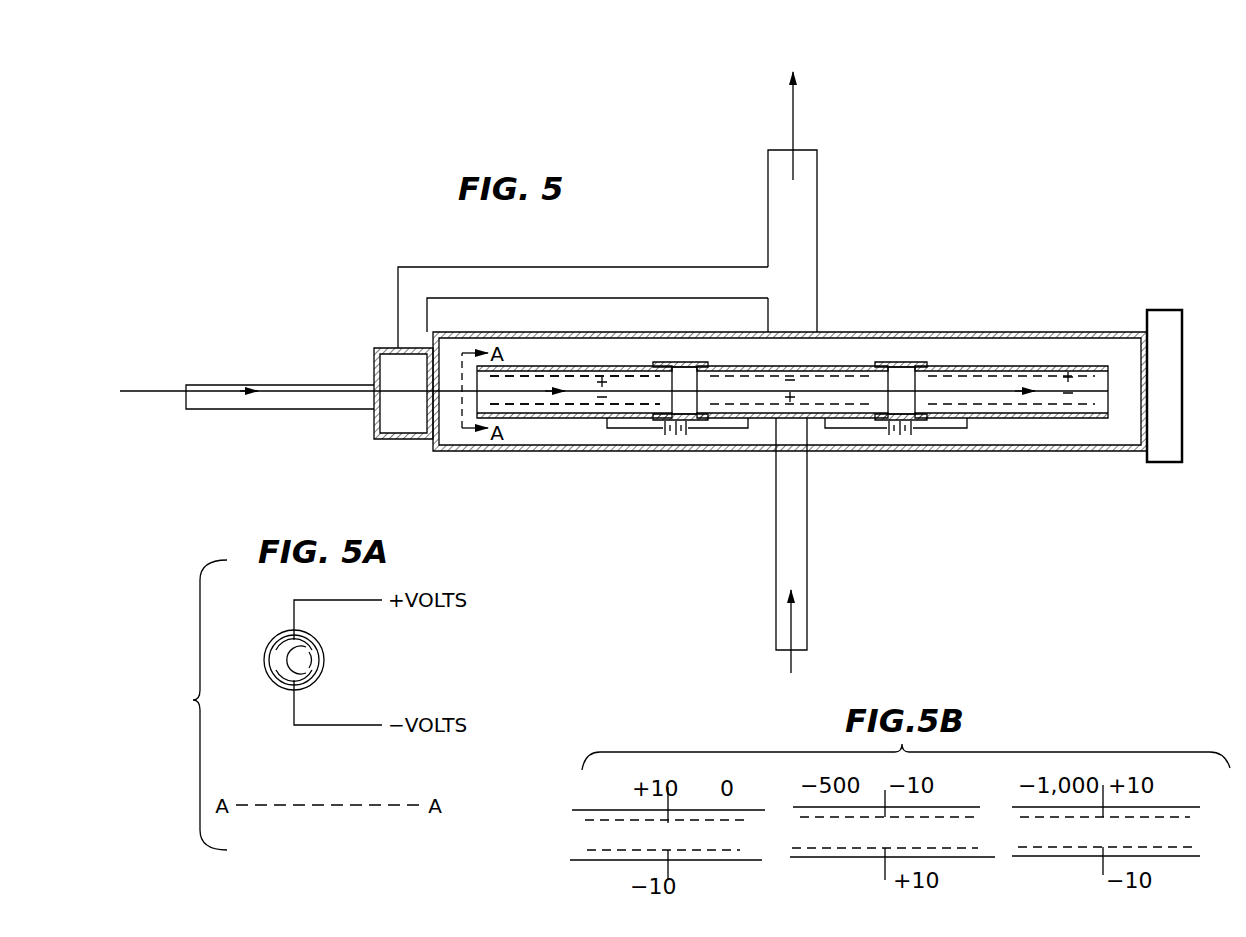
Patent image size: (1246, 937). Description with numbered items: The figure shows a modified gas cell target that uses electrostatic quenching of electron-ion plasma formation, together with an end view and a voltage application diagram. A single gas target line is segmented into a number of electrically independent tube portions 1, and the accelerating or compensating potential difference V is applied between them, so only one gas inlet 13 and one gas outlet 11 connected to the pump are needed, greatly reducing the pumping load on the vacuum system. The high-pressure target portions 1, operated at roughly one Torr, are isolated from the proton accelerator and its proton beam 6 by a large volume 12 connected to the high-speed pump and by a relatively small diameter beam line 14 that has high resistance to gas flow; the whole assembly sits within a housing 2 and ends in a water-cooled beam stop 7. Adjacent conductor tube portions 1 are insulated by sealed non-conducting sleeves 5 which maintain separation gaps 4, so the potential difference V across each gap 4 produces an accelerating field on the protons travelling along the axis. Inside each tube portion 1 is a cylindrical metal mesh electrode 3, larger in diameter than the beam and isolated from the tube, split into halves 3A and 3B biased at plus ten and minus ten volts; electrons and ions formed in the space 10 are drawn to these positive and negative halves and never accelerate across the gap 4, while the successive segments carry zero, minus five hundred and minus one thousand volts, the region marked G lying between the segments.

In FIG. 5, the tube portion 1 is at (533, 366).
In FIG. 5A, the tube portion 1 is at (285, 633).
In FIG. 5, the housing 2 is at (1050, 450).
In FIG. 5, the cylindrical metal mesh electrode 3 is at (590, 405).
In FIG. 5A, the cylindrical metal mesh electrode 3 is at (283, 683).
In FIG. 5B, the cylindrical metal mesh electrode 3 is at (604, 822).
In FIG. 5, the positive half of the mesh 3A is at (613, 376).
In FIG. 5A, the positive half of the mesh 3A is at (314, 643).
In FIG. 5B, the positive half of the mesh 3A is at (752, 820).
In FIG. 5, the negative half of the mesh 3B is at (633, 406).
In FIG. 5A, the negative half of the mesh 3B is at (314, 670).
In FIG. 5B, the negative half of the mesh 3B is at (740, 850).
In FIG. 5, the separation gap 4 is at (683, 398).
In FIG. 5, the non-conducting sleeve 5 is at (705, 362).
In FIG. 5, the proton beam 6 is at (160, 402).
In FIG. 5, the beam stop 7 is at (1182, 440).
In FIG. 5, the space 10 is at (574, 390).
In FIG. 5B, the space 10 is at (942, 830).
In FIG. 5, the gas outlet 11 is at (785, 165).
In FIG. 5, the large volume 12 is at (393, 362).
In FIG. 5, the gas inlet 13 is at (800, 610).
In FIG. 5, the beam line 14 is at (303, 384).
In FIG. 5, the potential difference V is at (676, 440).
In FIG. 5, the gap G is at (672, 331).